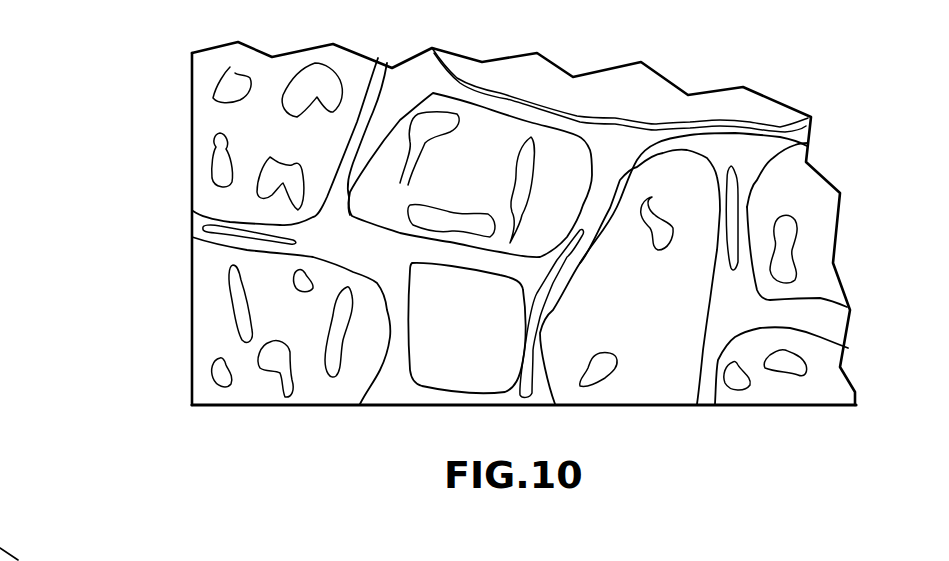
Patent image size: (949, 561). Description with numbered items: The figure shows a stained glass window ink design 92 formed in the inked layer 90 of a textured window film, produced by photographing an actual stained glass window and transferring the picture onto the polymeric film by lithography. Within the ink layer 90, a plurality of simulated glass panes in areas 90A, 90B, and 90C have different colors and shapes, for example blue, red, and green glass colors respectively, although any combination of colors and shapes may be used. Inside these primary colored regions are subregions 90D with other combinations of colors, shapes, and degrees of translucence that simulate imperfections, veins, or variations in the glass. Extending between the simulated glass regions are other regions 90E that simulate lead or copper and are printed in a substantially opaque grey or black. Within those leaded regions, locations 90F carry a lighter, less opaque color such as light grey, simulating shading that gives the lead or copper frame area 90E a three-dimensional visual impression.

The inked layer 90 is at (192, 86).
The stained glass window ink design 92 is at (137, 158).
The simulated glass pane area 90A is at (482, 125).
The simulated glass pane area 90B is at (820, 210).
The simulated glass pane area 90C is at (204, 345).
The subregions 90D is at (229, 278).
The simulated lead or copper regions 90E is at (398, 87).
The lighter color locations 90F is at (800, 128).